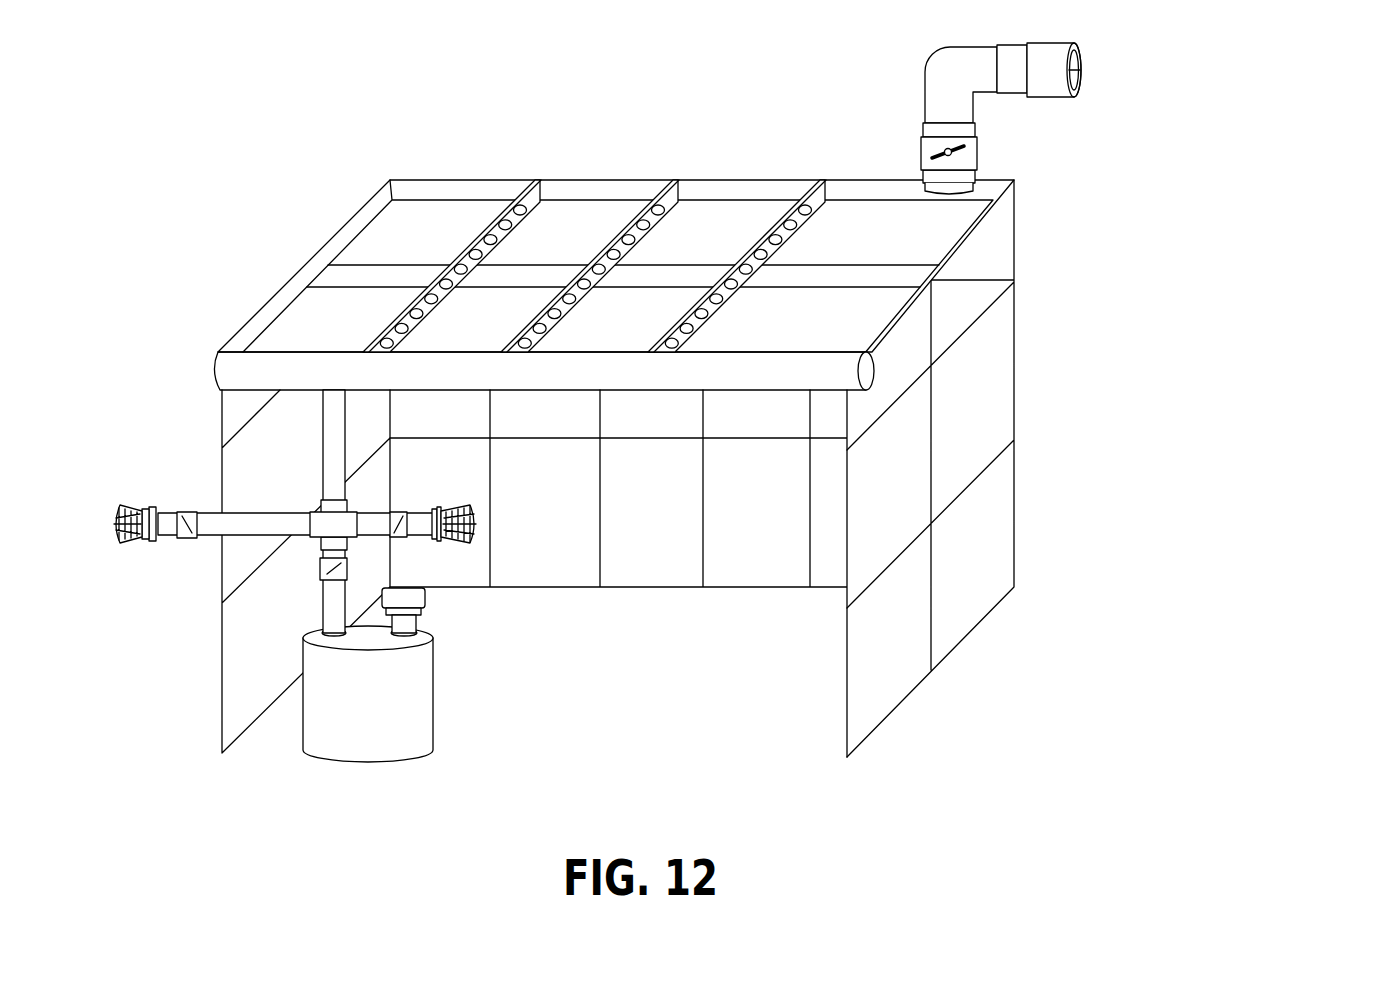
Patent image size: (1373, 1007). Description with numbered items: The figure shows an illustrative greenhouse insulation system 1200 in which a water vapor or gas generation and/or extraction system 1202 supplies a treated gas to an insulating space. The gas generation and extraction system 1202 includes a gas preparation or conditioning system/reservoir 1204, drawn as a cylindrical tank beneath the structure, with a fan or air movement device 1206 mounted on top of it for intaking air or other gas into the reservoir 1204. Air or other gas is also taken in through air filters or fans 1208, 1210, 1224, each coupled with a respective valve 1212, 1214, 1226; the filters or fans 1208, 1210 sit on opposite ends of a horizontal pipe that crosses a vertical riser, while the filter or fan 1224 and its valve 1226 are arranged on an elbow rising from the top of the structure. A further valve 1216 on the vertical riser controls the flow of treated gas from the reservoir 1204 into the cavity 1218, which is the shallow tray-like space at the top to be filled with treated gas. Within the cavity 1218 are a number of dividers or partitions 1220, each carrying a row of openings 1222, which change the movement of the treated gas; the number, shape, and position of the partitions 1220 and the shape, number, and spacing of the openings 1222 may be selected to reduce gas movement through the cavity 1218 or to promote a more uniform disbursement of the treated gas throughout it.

The greenhouse insulation system 1200 is at (1303, 128).
The water vapor or gas generation and/or extraction system 1202 is at (379, 634).
The gas preparation or conditioning system/reservoir 1204 is at (427, 760).
The fan or air movement device 1206 is at (426, 598).
The air filter or fan 1208 is at (472, 508).
The air filter or fan 1210 is at (133, 512).
The valve 1212 is at (185, 539).
The valve 1214 is at (397, 538).
The valve 1216 is at (318, 567).
The cavity 1218 is at (416, 222).
The dividers or partitions 1220 is at (518, 217).
The openings 1222 is at (434, 308).
The air filter or fan 1224 is at (1048, 43).
The valve 1226 is at (978, 152).